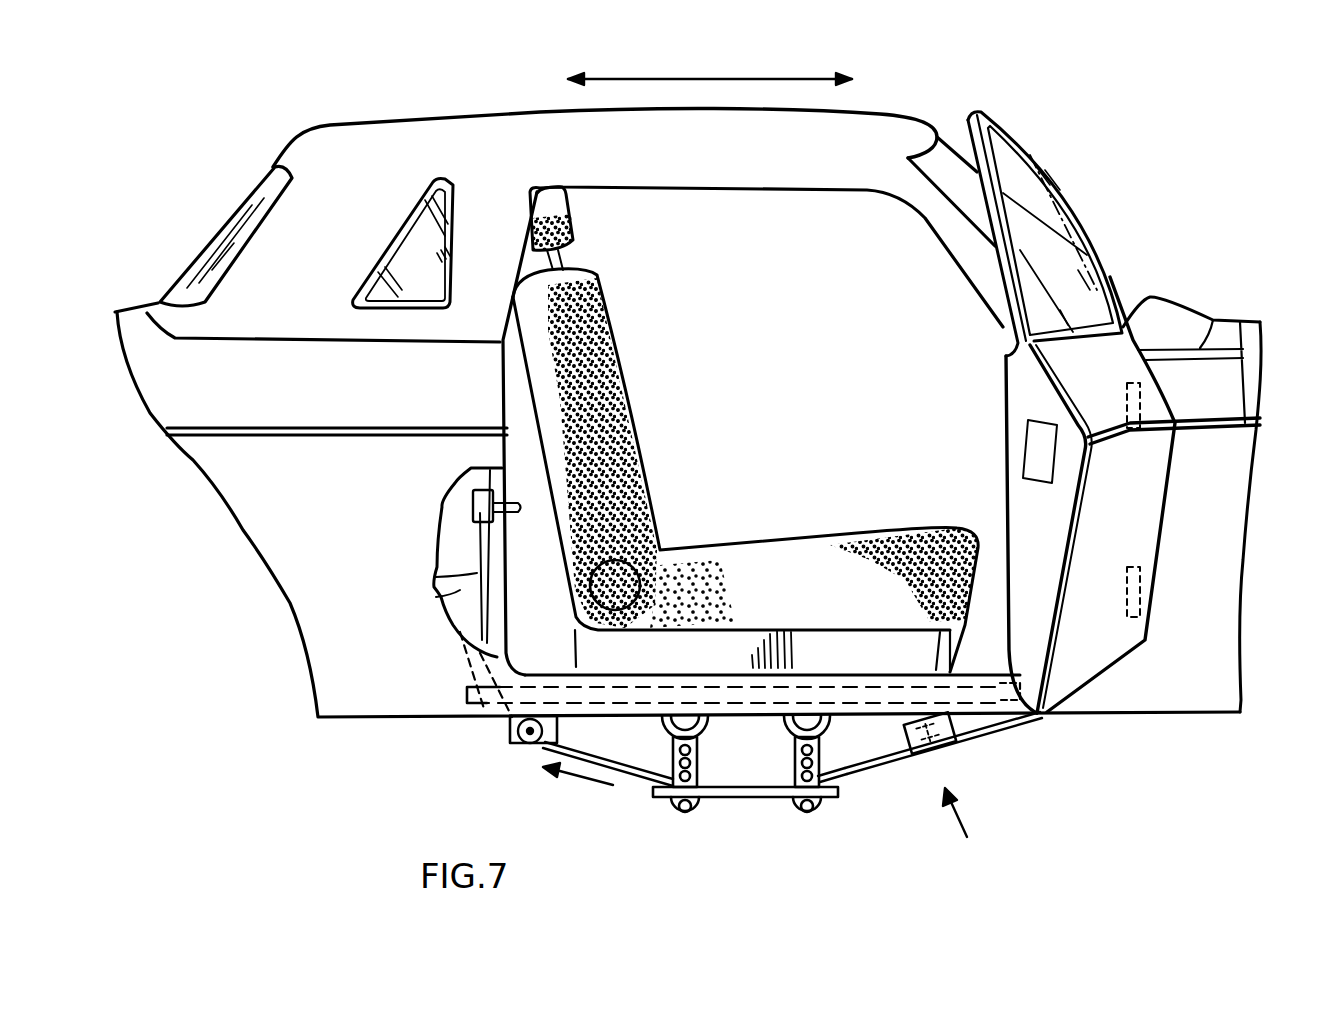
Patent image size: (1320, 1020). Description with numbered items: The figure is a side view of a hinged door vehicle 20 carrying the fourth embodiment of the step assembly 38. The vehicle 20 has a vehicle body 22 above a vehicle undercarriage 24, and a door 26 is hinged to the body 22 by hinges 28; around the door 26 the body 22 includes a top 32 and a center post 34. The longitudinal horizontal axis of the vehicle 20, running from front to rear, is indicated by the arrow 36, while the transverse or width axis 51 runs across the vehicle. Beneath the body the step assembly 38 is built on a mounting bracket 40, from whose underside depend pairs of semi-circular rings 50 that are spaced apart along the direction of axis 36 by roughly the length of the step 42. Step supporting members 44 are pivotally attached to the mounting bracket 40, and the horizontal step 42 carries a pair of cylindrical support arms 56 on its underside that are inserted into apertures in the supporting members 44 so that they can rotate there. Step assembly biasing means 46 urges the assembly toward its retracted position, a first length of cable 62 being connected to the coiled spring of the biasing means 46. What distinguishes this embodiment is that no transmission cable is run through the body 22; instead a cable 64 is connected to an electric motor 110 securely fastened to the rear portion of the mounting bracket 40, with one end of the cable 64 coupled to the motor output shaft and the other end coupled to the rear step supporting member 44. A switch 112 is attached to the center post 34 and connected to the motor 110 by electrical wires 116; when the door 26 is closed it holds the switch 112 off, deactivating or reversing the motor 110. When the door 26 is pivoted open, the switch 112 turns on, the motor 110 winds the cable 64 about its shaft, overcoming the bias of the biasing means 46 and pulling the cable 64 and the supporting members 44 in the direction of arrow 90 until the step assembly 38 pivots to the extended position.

The vehicle 20 is at (1152, 297).
The vehicle body 22 is at (1258, 321).
The vehicle undercarriage 24 is at (997, 703).
The door 26 is at (1023, 500).
The hinges 28 is at (1135, 413).
The top 32 is at (833, 131).
The center post 34 is at (487, 290).
The arrow 36 is at (600, 78).
The step assembly 38 is at (976, 826).
The mounting bracket 40 is at (748, 668).
The step 42 is at (753, 797).
The step supporting members 44 is at (818, 770).
The biasing means 46 is at (950, 745).
The semi-circular rings 50 is at (786, 742).
The transverse axis 51 is at (685, 712).
The support arms 56 is at (677, 814).
The first length of cable 62 is at (884, 757).
The cable 64 is at (642, 776).
The arrow 90 is at (580, 778).
The electric motor 110 is at (503, 739).
The switch 112 is at (480, 492).
The electrical wires 116 is at (436, 576).